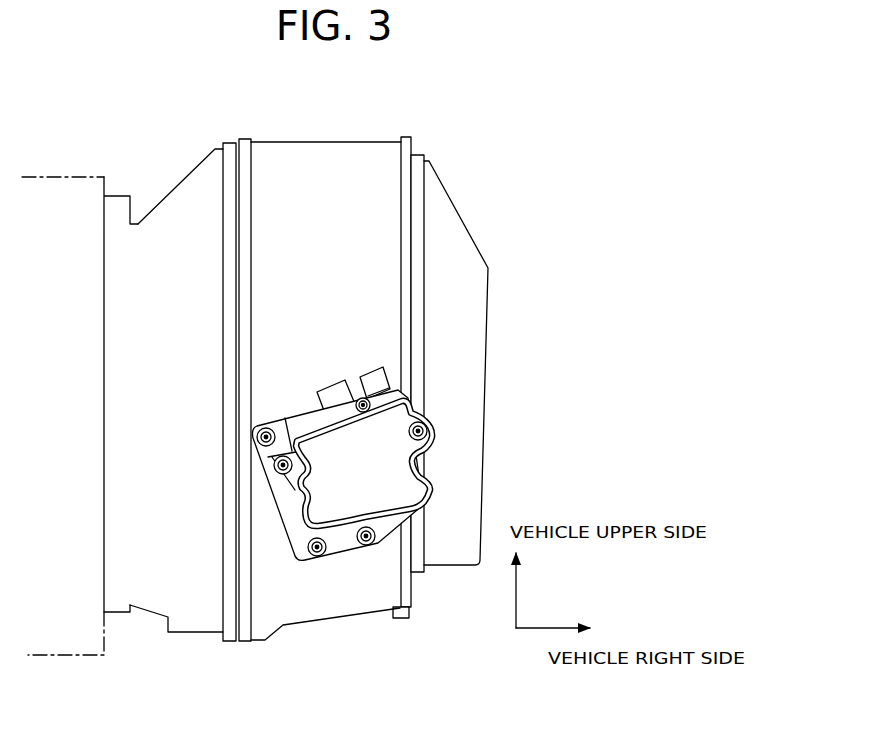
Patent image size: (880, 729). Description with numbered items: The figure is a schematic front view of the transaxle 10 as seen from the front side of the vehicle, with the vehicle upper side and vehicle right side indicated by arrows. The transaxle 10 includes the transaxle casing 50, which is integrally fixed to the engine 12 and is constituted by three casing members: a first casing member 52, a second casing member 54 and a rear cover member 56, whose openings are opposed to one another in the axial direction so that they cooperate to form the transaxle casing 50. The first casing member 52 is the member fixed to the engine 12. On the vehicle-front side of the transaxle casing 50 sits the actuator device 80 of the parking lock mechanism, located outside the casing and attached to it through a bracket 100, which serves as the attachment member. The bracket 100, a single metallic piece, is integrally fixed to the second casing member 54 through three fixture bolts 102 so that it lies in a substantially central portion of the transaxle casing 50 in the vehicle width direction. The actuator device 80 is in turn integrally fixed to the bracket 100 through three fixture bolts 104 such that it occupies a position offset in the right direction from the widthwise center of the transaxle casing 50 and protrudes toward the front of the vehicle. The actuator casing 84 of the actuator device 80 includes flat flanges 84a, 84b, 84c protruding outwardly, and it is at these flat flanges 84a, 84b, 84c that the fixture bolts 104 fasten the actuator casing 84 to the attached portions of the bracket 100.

The transaxle 10 is at (464, 154).
The engine 12 is at (53, 197).
The transaxle casing 50 is at (199, 126).
The first casing member 52 is at (167, 217).
The second casing member 54 is at (315, 162).
The rear cover member 56 is at (447, 220).
The actuator device 80 is at (422, 514).
The actuator casing 84 is at (381, 478).
The flat flange 84a is at (290, 493).
The flat flange 84b is at (410, 511).
The flat flange 84c is at (427, 446).
The bracket 100 is at (279, 522).
The fixture bolt 102 is at (257, 436).
The fixture bolt 104 is at (273, 458).